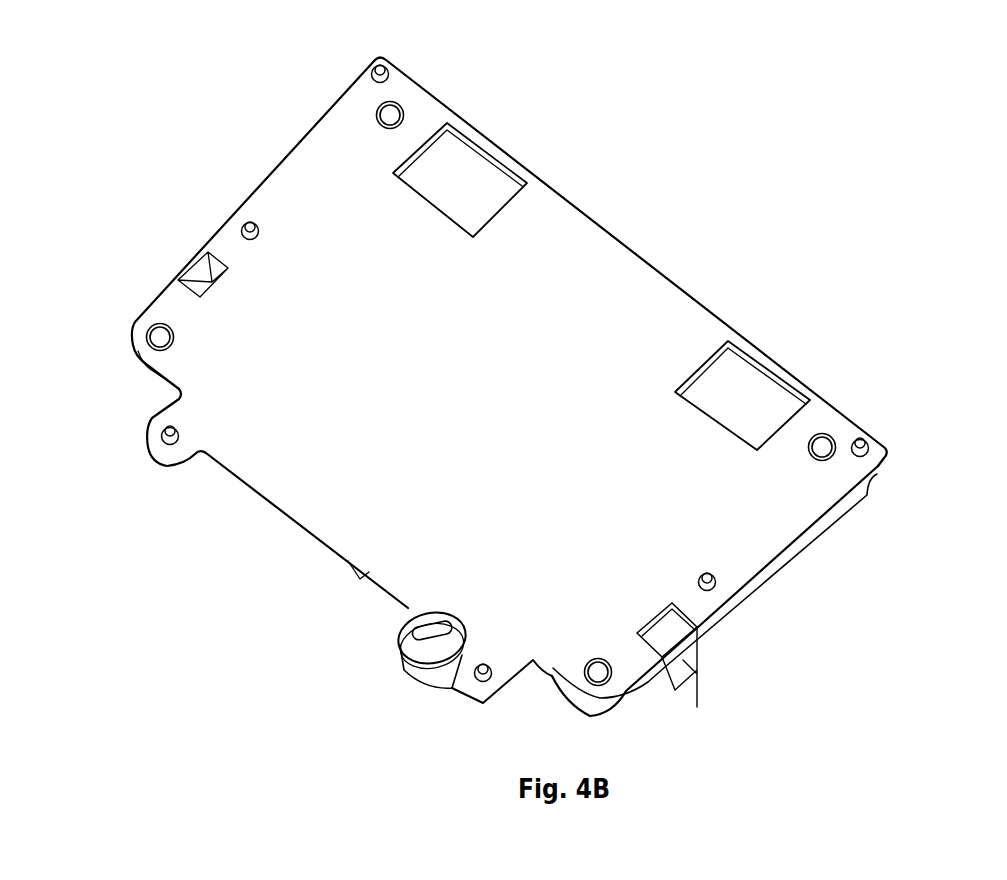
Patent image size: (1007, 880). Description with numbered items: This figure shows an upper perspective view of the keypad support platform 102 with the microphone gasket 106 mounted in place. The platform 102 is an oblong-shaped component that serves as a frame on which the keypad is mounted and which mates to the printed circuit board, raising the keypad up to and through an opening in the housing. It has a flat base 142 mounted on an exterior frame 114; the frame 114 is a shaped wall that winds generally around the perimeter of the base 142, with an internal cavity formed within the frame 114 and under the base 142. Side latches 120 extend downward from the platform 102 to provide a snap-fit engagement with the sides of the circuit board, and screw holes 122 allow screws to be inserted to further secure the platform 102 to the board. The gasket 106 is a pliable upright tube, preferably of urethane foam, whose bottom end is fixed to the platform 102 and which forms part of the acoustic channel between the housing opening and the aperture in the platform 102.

The keypad support platform 102 is at (207, 108).
The screw holes 122 is at (405, 111).
The exterior frame 114 is at (818, 528).
The flat base 142 is at (888, 451).
The side latches 120 is at (698, 708).
The gasket 106 is at (407, 667).